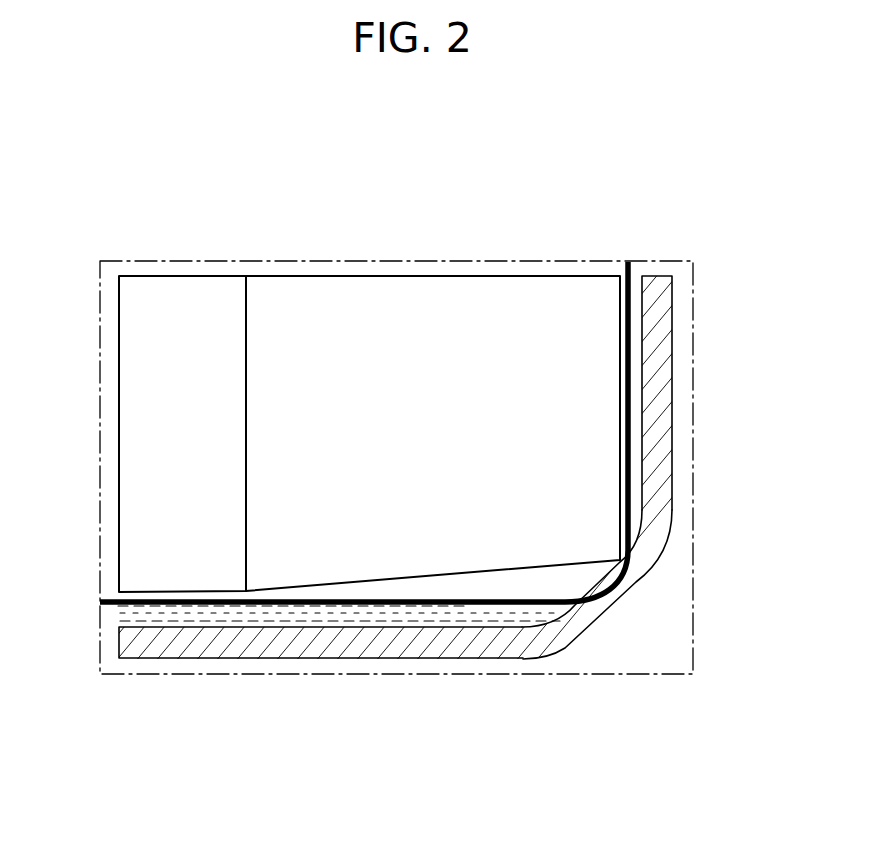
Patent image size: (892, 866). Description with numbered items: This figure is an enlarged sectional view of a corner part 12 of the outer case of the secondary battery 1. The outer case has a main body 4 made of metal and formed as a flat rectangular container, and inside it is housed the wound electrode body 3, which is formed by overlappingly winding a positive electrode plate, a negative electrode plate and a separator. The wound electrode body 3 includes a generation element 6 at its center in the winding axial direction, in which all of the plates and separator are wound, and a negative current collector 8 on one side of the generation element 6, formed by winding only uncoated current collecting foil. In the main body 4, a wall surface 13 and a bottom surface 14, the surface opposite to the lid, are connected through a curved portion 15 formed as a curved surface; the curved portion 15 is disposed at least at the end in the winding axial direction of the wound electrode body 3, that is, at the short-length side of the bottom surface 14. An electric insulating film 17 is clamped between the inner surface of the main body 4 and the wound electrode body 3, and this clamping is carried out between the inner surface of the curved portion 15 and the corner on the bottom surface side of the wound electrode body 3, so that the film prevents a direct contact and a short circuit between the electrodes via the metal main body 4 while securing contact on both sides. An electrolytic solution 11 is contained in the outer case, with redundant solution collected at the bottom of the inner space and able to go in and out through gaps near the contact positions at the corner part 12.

The secondary battery 1 is at (628, 194).
The wound electrode body 3 is at (293, 192).
The main body 4 is at (446, 481).
The generation element 6 is at (192, 337).
The negative current collector 8 is at (278, 337).
The electrolytic solution 11 is at (409, 618).
The corner part 12 is at (550, 260).
The wall surface 13 is at (642, 344).
The bottom surface 14 is at (258, 627).
The curved portion 15 is at (623, 593).
The electric insulating film 17 is at (630, 413).